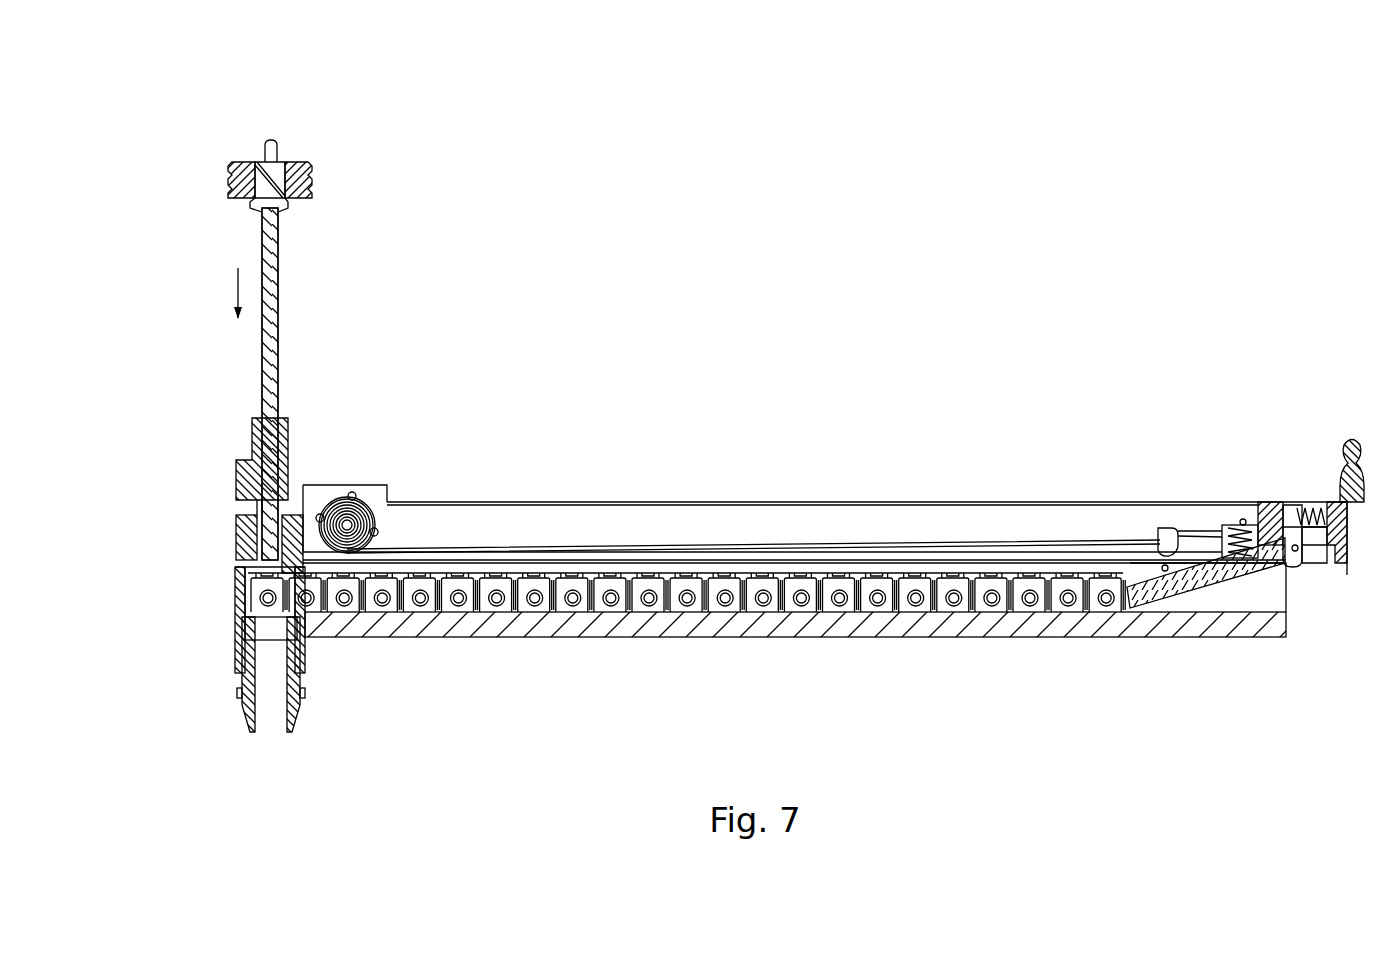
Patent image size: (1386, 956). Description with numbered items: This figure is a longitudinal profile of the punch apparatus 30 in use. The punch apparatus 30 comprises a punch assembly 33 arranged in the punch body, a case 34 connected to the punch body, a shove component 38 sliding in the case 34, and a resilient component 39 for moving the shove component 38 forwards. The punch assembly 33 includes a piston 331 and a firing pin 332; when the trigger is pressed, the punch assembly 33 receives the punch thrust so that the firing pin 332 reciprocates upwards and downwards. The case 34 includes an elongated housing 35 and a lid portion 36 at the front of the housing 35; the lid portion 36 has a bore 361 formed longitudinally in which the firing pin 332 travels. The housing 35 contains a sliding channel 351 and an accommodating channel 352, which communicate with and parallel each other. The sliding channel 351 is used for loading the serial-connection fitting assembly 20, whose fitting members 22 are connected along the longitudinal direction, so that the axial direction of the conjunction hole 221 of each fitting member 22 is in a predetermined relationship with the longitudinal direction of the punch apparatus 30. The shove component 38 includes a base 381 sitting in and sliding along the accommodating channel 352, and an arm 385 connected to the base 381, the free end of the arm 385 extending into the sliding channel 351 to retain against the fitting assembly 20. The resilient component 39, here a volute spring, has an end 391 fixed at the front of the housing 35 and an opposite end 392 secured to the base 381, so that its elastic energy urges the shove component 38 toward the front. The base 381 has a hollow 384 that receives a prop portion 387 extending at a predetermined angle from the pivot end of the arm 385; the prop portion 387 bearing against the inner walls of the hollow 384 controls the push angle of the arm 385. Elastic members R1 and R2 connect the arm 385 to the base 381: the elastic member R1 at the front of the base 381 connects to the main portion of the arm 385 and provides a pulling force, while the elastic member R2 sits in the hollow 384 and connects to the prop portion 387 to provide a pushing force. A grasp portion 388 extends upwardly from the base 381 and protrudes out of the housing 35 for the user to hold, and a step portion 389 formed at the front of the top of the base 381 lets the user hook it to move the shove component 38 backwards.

The punch apparatus 30 is at (1022, 238).
The punch assembly 33 is at (340, 148).
The piston 331 is at (240, 165).
The firing pin 332 is at (262, 355).
The lid portion 36 is at (237, 526).
The base block 22 is at (240, 590).
The bore 361 is at (275, 722).
The resilient component 39 is at (365, 469).
The end 391 is at (346, 520).
The case 34 is at (823, 498).
The accommodating channel 352 is at (1078, 520).
The serial-connection fitting assembly 20 is at (956, 570).
The conjunction hole 221 is at (457, 618).
The elongated housing 35 is at (771, 632).
The sliding channel 351 is at (1275, 597).
The arm 385 is at (1218, 600).
The opposite end 392 is at (1190, 530).
The step portion 389 is at (1240, 520).
The elastic member R1 is at (1240, 522).
The base 381 is at (1270, 518).
The hollow 384 is at (1292, 565).
The prop portion 387 is at (1300, 515).
The elastic member R2 is at (1318, 525).
The shove component 38 is at (1340, 412).
The grasp portion 388 is at (1350, 445).